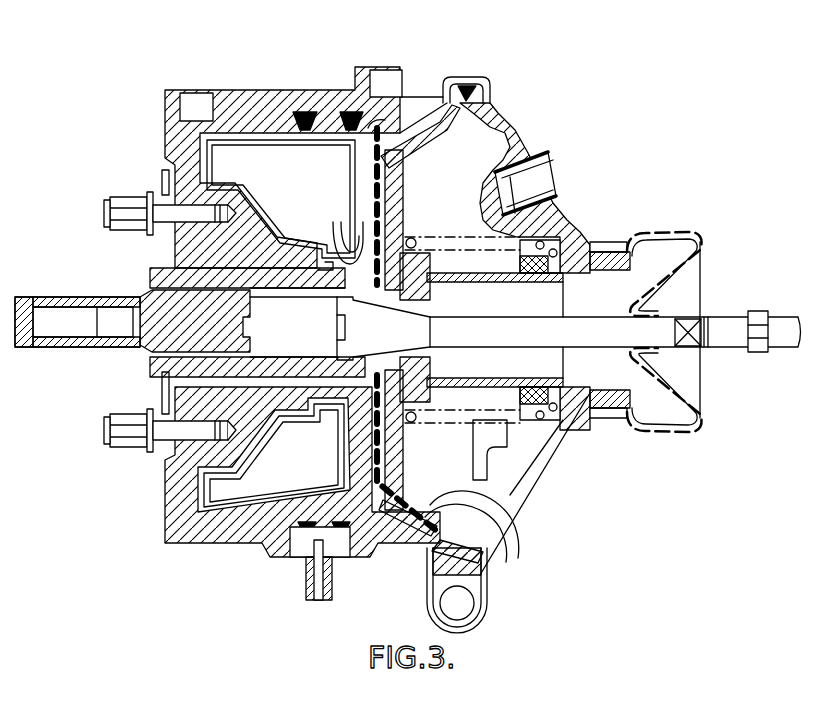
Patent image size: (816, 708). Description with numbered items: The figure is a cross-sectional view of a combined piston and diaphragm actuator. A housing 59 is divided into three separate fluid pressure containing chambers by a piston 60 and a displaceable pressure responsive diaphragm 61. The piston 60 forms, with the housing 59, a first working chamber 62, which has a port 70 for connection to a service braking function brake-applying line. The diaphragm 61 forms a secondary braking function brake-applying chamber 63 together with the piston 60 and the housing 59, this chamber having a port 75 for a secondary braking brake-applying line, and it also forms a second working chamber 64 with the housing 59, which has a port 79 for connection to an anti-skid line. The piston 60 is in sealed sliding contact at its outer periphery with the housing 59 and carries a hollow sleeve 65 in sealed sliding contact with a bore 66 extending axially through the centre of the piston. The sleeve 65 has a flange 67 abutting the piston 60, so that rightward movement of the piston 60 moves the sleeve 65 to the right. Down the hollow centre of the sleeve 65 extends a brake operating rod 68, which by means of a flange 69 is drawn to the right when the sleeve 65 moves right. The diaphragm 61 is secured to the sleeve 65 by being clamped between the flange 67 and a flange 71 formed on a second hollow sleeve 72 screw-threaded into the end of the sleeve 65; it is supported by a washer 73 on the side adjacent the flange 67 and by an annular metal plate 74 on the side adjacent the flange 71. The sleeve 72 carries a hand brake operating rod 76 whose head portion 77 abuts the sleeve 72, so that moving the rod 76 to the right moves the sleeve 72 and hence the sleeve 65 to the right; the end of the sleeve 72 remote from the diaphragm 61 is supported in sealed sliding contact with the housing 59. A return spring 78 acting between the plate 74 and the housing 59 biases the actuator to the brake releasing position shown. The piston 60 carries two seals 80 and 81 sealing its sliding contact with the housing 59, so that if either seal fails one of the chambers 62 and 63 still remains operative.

The housing 59 is at (322, 113).
The piston 60 is at (417, 515).
The diaphragm 61 is at (482, 560).
The first working chamber 62 is at (182, 545).
The secondary braking function brake-applying chamber 63 is at (407, 130).
The second working chamber 64 is at (522, 505).
The hollow sleeve 65 is at (150, 274).
The bore 66 is at (160, 244).
The flange 67 is at (350, 250).
The brake operating rod 68 is at (143, 343).
The flange 69 is at (152, 300).
The port 70 is at (200, 112).
The flange 71 is at (418, 243).
The second hollow sleeve 72 is at (456, 282).
The washer 73 is at (357, 235).
The annular metal plate 74 is at (400, 185).
The port 75 is at (385, 85).
The hand brake operating rod 76 is at (758, 342).
The head portion 77 is at (340, 315).
The return spring 78 is at (500, 440).
The port 79 is at (535, 190).
The seal 80 is at (292, 545).
The seal 81 is at (338, 545).